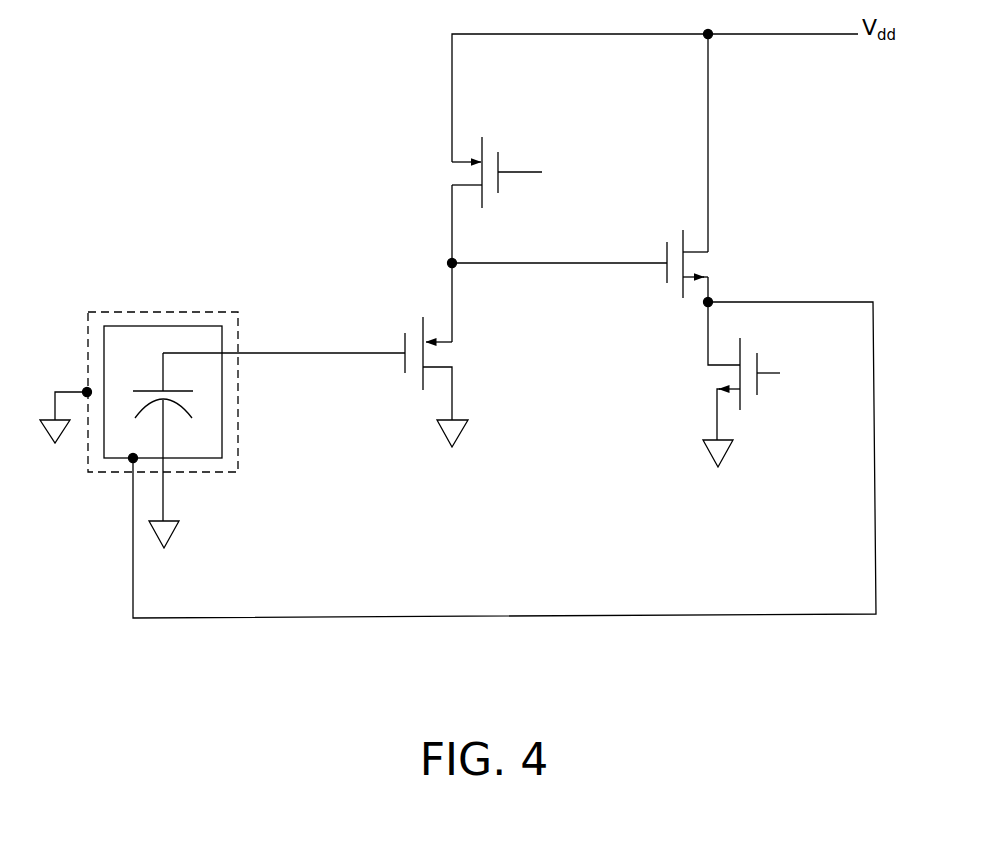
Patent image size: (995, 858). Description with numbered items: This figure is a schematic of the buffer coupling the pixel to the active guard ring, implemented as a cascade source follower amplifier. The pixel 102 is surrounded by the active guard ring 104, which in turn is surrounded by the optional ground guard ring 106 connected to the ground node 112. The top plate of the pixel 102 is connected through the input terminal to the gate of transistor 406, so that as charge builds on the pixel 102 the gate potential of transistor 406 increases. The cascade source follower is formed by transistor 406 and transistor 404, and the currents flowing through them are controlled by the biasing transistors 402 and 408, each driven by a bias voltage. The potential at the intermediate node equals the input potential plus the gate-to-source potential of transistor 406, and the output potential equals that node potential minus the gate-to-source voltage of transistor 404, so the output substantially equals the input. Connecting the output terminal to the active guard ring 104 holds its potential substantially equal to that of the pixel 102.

The pixel 102 is at (143, 385).
The active guard ring 104 is at (146, 322).
The ground guard ring 106 is at (202, 308).
The ground node 112 is at (47, 443).
The biasing transistor 402 is at (487, 135).
The transistor 404 is at (675, 223).
The transistor 406 is at (412, 317).
The biasing transistor 408 is at (749, 407).